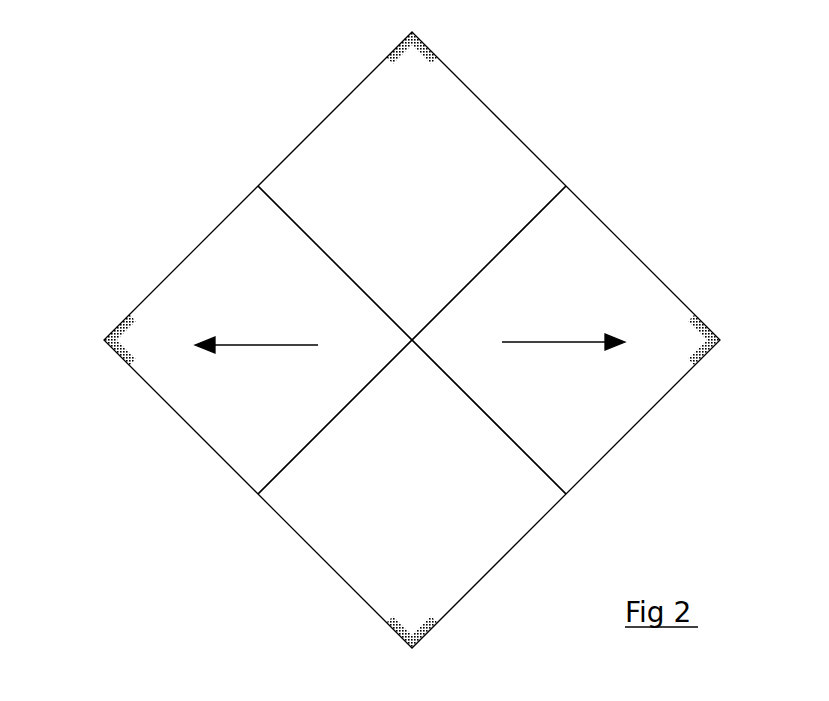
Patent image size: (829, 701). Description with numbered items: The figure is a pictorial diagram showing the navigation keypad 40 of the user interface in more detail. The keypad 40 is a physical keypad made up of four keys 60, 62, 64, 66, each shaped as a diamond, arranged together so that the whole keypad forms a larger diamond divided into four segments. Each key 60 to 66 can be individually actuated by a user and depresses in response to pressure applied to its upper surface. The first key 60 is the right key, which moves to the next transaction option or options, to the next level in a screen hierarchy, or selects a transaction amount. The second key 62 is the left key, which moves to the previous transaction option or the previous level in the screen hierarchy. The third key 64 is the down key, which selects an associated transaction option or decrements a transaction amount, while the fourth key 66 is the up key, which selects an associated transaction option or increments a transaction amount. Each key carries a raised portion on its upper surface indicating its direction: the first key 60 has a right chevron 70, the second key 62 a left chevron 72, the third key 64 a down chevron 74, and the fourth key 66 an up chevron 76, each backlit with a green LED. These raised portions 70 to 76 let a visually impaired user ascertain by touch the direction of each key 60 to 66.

The navigation keypad 40 is at (126, 553).
The first key 60 is at (571, 397).
The second key 62 is at (270, 395).
The third key 64 is at (426, 507).
The fourth key 66 is at (424, 207).
The right chevron 70 is at (702, 328).
The left chevron 72 is at (120, 330).
The down chevron 74 is at (418, 630).
The up chevron 76 is at (425, 43).